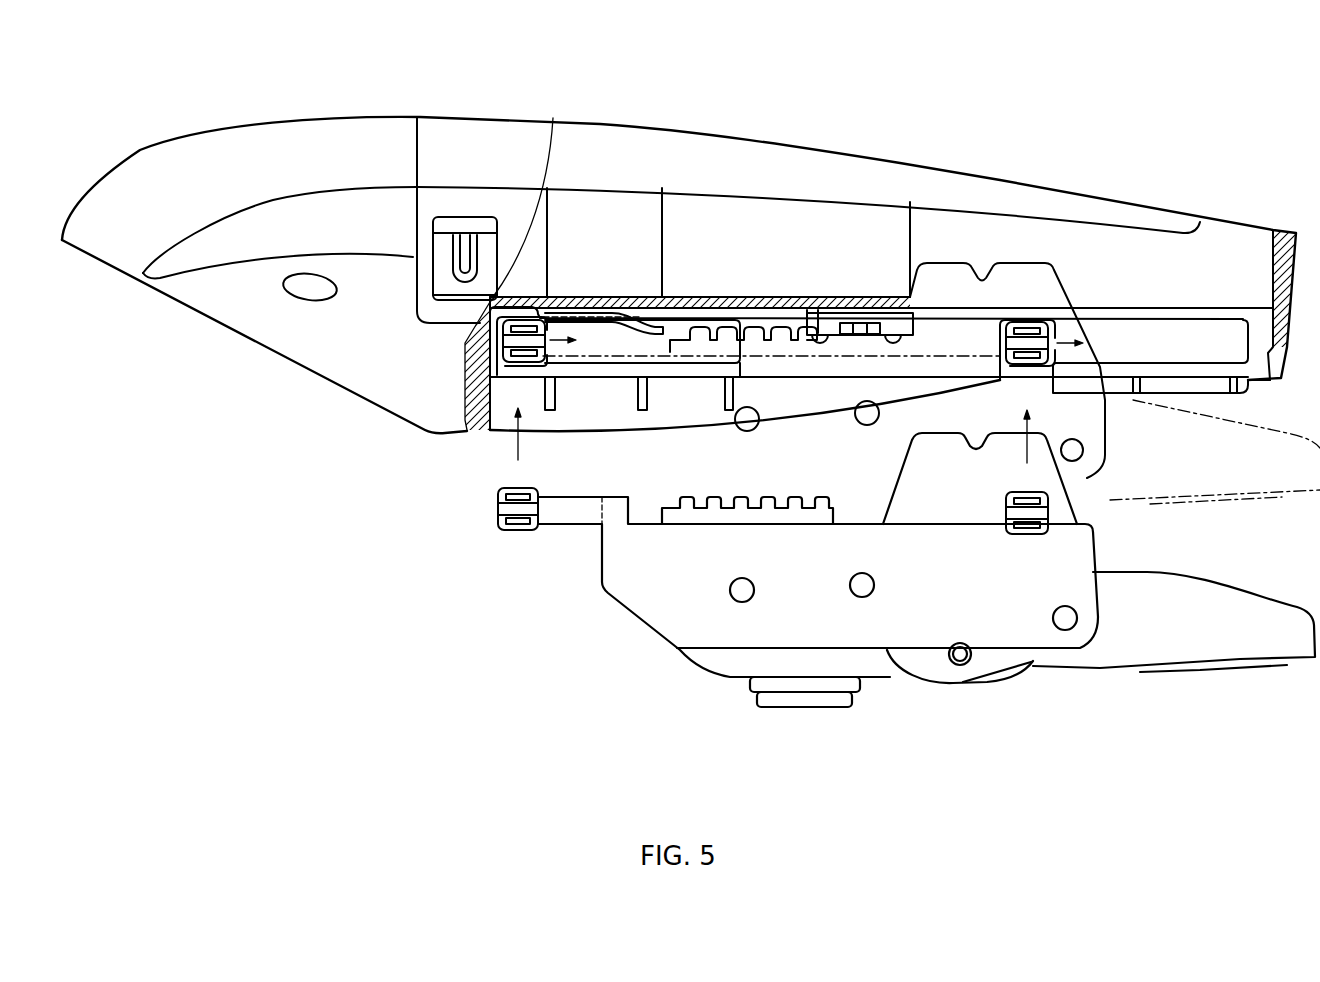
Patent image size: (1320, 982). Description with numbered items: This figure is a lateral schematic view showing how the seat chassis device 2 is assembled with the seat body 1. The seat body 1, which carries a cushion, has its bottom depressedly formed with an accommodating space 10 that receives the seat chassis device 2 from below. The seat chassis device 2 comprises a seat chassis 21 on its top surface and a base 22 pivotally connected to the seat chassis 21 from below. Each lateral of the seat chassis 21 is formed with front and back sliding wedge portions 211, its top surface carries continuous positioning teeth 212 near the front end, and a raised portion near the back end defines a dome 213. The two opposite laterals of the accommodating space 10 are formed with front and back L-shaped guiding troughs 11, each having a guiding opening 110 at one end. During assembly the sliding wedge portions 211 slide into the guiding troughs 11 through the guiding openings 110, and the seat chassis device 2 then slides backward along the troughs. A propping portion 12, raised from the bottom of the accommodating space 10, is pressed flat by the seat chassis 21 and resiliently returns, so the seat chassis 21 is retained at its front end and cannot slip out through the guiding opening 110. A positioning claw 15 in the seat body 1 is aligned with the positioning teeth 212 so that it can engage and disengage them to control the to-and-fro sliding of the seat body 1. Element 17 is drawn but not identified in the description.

The seat body 1 is at (758, 167).
The accommodating space 10 is at (807, 377).
The L-shaped guiding trough 11 is at (683, 320).
The guiding opening 110 is at (503, 370).
The propping portion 12 is at (656, 325).
The positioning claw 15 is at (862, 330).
The cover 17 is at (1102, 260).
The seat chassis device 2 is at (890, 702).
The seat chassis 21 is at (637, 568).
The sliding wedge portion 211 is at (497, 507).
The continuous positioning teeth 212 is at (718, 497).
The dome 213 is at (920, 472).
The base 22 is at (738, 665).